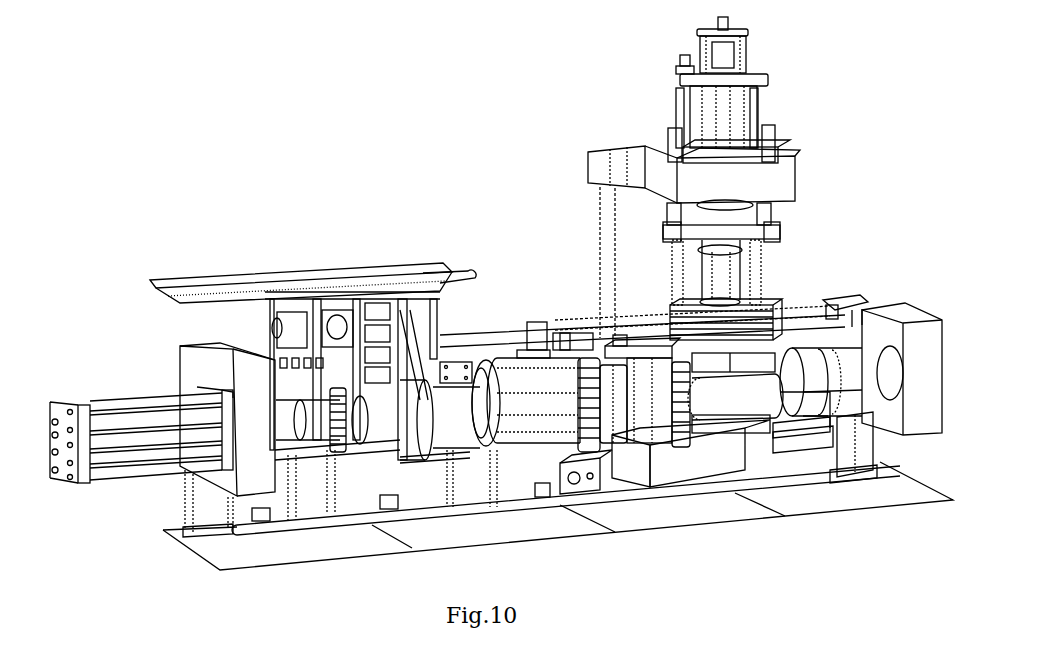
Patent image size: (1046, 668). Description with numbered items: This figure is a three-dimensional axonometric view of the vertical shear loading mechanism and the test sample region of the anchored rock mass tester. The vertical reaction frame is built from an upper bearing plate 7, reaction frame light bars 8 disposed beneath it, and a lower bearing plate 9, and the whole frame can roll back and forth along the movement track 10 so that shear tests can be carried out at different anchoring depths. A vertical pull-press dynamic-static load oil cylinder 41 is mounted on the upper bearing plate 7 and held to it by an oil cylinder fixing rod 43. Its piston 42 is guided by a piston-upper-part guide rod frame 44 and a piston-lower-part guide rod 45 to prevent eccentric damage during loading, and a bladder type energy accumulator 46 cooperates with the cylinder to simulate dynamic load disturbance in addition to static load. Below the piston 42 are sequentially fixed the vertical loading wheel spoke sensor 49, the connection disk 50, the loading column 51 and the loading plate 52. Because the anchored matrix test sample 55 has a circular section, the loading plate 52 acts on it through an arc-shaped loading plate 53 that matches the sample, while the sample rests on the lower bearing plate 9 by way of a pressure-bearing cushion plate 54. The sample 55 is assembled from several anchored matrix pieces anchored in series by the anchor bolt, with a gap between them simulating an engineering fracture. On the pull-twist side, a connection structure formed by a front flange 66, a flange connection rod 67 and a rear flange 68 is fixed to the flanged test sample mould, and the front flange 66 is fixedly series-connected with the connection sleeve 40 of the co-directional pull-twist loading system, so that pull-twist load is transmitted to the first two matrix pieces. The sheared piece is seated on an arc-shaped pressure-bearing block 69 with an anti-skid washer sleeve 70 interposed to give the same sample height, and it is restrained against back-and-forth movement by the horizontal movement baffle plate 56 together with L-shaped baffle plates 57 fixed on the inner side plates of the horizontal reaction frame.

The upper bearing plate 7 is at (655, 173).
The reaction frame light bar 8 is at (607, 255).
The lower bearing plate 9 is at (758, 457).
The movement track 10 is at (600, 493).
The connection sleeve 40 is at (458, 420).
The vertical pull-press dynamic-static load oil cylinder 41 is at (737, 105).
The piston of vertical pull-press dynamic-static load oil cylinder 42 is at (735, 53).
The oil cylinder fixing rod 43 is at (755, 118).
The piston-upper-part guide rod frame 44 is at (743, 35).
The piston-lower-part guide rod 45 is at (773, 140).
The bladder type energy accumulator 46 is at (683, 62).
The vertical loading wheel spoke sensor 49 is at (722, 220).
The connection disk 50 is at (722, 237).
The loading column 51 is at (722, 280).
The loading plate 52 is at (745, 318).
The arc-shaped loading plate 53 is at (735, 360).
The pressure-bearing cushion plate 54 is at (812, 372).
The sectionally-circular anchored matrix test sample 55 is at (733, 420).
The horizontal movement baffle plate 56 is at (673, 437).
The L-shaped baffle plate 57 is at (630, 352).
The front flange 66 is at (537, 420).
The flange connection rod 67 is at (565, 420).
The rear flange 68 is at (597, 415).
The arc-shaped pressure-bearing block 69 is at (797, 437).
The anti-skid washer sleeve 70 is at (812, 408).